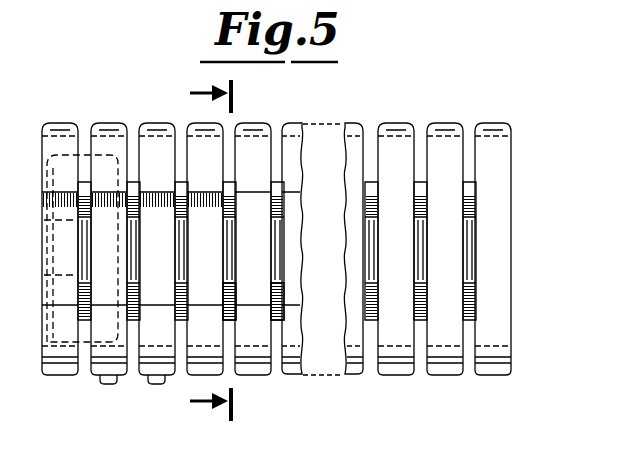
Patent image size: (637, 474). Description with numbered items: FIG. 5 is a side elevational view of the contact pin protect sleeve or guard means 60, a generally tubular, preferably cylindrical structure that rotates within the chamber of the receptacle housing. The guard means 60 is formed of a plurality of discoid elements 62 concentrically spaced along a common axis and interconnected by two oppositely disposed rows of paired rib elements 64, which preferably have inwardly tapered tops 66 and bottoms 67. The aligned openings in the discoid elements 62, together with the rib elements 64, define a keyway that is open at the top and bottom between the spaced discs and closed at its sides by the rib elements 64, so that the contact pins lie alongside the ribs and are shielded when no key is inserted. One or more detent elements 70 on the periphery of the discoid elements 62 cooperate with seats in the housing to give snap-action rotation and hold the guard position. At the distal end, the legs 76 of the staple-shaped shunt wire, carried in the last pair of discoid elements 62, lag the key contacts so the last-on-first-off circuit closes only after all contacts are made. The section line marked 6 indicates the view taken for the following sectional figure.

The guard means 60 is at (261, 268).
The discoid elements 62 is at (107, 122).
The rib elements 64 is at (132, 321).
The inwardly tapered tops 66 is at (277, 192).
The inwardly tapered bottoms 67 is at (277, 320).
The detent elements 70 is at (108, 385).
The legs 76 is at (88, 157).
The section line 6- 6 is at (219, 250).